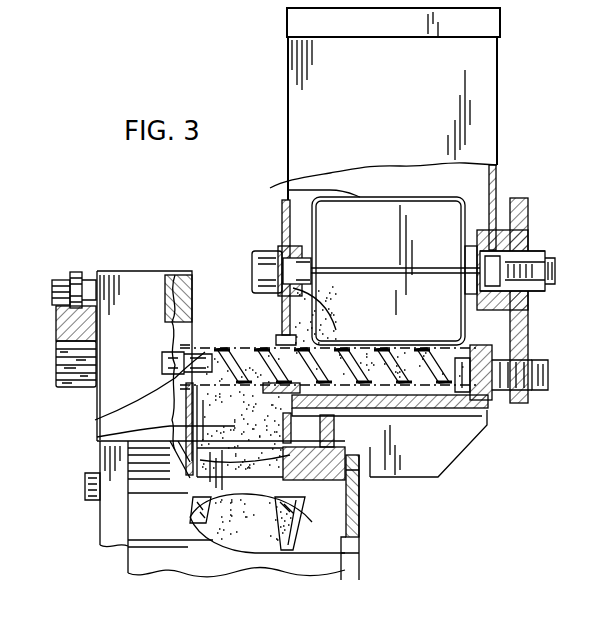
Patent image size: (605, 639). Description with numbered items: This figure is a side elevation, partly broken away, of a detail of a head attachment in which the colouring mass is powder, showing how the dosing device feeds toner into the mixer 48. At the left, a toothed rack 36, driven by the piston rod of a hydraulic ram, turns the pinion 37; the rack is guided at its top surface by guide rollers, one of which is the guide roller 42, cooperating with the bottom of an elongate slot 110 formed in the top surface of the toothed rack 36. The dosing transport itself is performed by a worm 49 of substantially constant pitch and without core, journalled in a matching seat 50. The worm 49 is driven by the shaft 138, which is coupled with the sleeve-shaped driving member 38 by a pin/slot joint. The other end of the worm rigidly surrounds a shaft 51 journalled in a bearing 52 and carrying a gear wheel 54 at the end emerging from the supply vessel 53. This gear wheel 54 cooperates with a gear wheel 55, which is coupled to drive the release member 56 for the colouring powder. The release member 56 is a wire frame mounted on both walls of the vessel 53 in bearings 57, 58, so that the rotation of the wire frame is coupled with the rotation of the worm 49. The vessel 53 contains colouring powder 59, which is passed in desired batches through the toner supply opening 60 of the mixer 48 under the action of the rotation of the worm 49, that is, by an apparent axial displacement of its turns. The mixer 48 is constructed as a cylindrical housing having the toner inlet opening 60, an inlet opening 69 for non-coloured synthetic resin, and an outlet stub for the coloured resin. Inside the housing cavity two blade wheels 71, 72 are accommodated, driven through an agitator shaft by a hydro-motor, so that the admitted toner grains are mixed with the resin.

The toothed rack 36 is at (57, 320).
The pinion 37 is at (62, 390).
The driving member 38 is at (160, 345).
The guide roller 42 is at (77, 272).
The mixer 48 is at (355, 562).
The worm 49 is at (218, 348).
The seat 50 is at (274, 348).
The shaft 51 is at (462, 408).
The bearing 52 is at (490, 400).
The supply vessel 53 is at (498, 197).
The gear wheel 54 is at (520, 398).
The gear wheel 55 is at (500, 190).
The release member 56 is at (288, 190).
The bearing 57 is at (282, 250).
The bearing 58 is at (495, 242).
The colouring powder 59 is at (258, 282).
The toner supply opening 60 is at (95, 440).
The inlet opening 69 is at (243, 530).
The blade wheel 71 is at (197, 524).
The blade wheel 72 is at (305, 535).
The elongate slot 110 is at (54, 306).
The shaft 138 is at (95, 420).